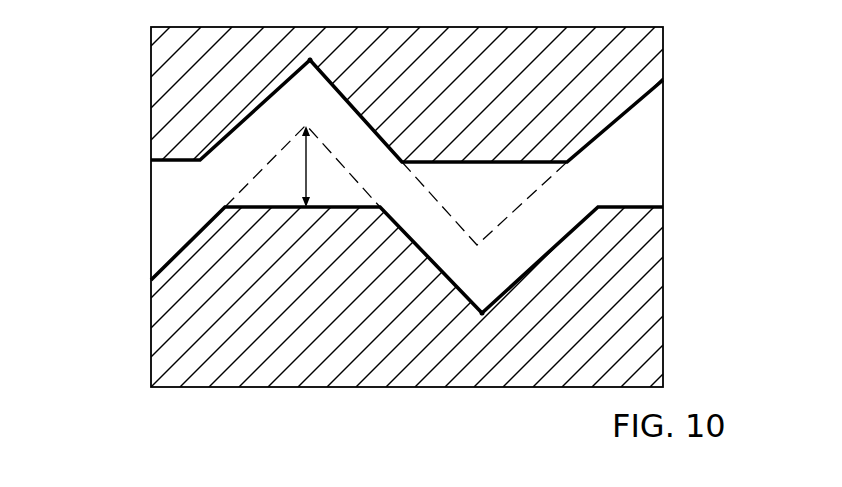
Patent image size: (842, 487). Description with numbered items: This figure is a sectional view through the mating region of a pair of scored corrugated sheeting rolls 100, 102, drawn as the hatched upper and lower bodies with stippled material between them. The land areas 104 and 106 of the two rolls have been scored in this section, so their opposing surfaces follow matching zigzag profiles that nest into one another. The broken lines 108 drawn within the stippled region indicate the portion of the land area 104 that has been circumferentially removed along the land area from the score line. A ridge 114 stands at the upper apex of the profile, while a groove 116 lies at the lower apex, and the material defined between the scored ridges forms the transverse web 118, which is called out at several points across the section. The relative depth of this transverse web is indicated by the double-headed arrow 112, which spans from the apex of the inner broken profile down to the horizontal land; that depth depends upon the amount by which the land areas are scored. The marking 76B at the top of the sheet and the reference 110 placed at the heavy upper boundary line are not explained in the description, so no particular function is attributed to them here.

The scored corrugated sheeting roll 100 is at (160, 121).
The scored corrugated sheeting roll 102 is at (150, 388).
The land area 104 is at (540, 142).
The land area 106 is at (183, 322).
The broken lines 108 is at (510, 215).
The upper interface boundary 110 is at (357, 92).
The arrow 112 is at (307, 170).
The ridge 114 is at (313, 80).
The groove 116 is at (482, 300).
The transverse web 118 is at (292, 178).
The section line indicator 76B is at (389, 7).